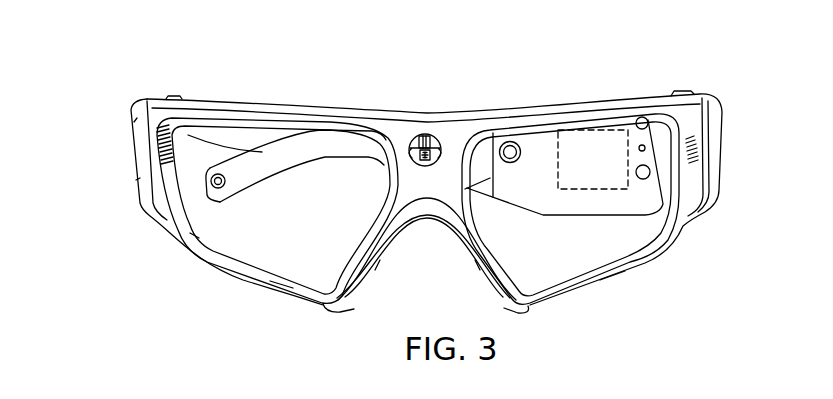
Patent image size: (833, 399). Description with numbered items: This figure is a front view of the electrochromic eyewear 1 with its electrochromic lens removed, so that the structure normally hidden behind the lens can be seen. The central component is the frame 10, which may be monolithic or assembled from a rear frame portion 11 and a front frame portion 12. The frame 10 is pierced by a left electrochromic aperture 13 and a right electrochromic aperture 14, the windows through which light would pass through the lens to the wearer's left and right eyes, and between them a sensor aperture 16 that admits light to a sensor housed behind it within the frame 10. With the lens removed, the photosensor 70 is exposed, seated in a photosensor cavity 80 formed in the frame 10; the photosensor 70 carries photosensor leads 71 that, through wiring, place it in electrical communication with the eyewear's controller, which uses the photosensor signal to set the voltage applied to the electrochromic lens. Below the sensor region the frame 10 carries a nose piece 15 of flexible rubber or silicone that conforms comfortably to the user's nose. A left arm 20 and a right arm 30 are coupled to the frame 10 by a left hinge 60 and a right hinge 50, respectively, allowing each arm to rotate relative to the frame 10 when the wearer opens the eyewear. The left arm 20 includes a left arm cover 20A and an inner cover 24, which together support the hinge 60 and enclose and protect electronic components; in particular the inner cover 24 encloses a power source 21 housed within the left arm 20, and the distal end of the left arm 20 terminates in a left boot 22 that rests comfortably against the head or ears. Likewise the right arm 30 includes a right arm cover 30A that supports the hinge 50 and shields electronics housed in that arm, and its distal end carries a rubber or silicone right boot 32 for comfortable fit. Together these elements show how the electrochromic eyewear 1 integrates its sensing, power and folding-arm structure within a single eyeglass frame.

The electrochromic eyewear 1 is at (723, 84).
The frame 10 is at (288, 107).
The rear frame portion 11 is at (189, 212).
The front frame portion 12 is at (148, 128).
The left electrochromic aperture 13 is at (558, 288).
The right electrochromic aperture 14 is at (241, 268).
The nose piece 15 is at (357, 313).
The sensor aperture 16 is at (436, 135).
The left arm 20 is at (478, 183).
The left arm cover 20A is at (722, 135).
The power source 21 is at (578, 171).
The left boot 22 is at (258, 184).
The inner cover 24 is at (597, 203).
The right arm 30 is at (134, 170).
The right arm cover 30A is at (134, 152).
The right boot 32 is at (245, 125).
The right hinge 50 is at (165, 96).
The left hinge 60 is at (691, 91).
The photosensor 70 is at (413, 164).
The photosensor leads 71 is at (441, 141).
The photosensor cavity 80 is at (411, 138).